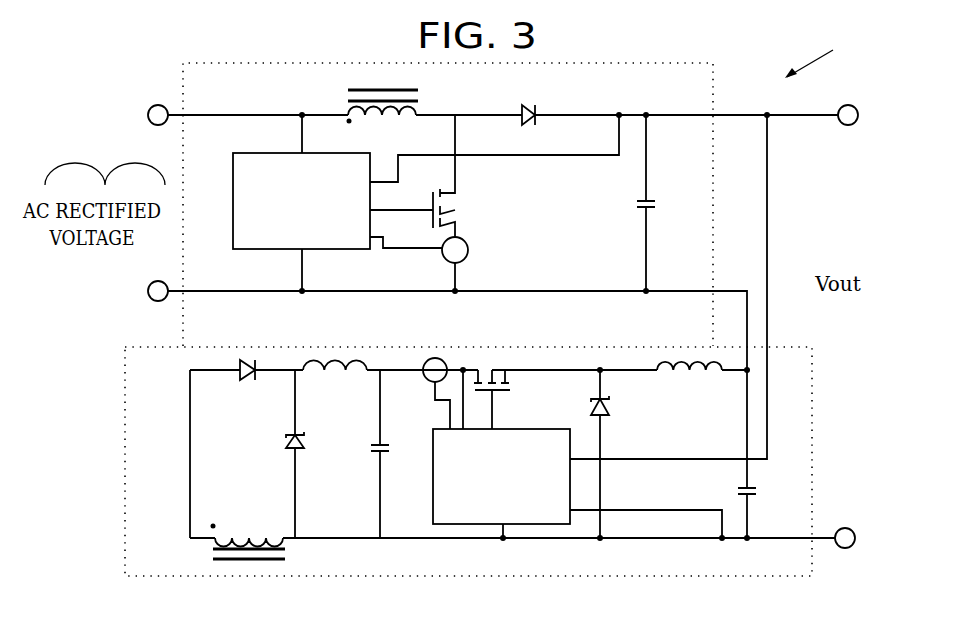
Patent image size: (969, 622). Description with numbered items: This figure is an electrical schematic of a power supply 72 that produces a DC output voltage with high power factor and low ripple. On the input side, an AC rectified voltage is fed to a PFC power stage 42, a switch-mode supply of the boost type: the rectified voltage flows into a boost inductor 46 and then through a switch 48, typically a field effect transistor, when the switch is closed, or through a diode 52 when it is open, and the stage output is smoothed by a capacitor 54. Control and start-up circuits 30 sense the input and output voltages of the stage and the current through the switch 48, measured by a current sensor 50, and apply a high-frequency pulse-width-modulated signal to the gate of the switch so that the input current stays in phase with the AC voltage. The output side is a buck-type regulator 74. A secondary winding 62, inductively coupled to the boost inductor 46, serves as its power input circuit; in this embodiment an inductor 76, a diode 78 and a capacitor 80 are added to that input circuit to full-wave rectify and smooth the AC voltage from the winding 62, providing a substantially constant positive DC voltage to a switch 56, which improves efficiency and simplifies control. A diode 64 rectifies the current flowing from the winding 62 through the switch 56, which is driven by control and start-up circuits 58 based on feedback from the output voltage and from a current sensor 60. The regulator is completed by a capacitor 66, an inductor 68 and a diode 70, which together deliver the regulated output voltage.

The control and start-up circuits 30 is at (236, 250).
The PFC power stage 42 is at (680, 62).
The boost inductor 46 is at (345, 110).
The switch 48 is at (445, 207).
The current sensor 50 is at (468, 257).
The diode 52 is at (535, 107).
The capacitor 54 is at (650, 207).
The switch 56 is at (487, 368).
The control and start-up circuits 58 is at (433, 436).
The current sensor 60 is at (440, 358).
The secondary winding 62 is at (232, 530).
The diode 64 is at (248, 378).
The capacitor 66 is at (758, 490).
The inductor 68 is at (668, 372).
The diode 70 is at (607, 416).
The power supply 72 is at (822, 51).
The buck-type regulator 74 is at (812, 427).
The inductor 76 is at (345, 372).
The diode 78 is at (290, 438).
The capacitor 80 is at (385, 452).